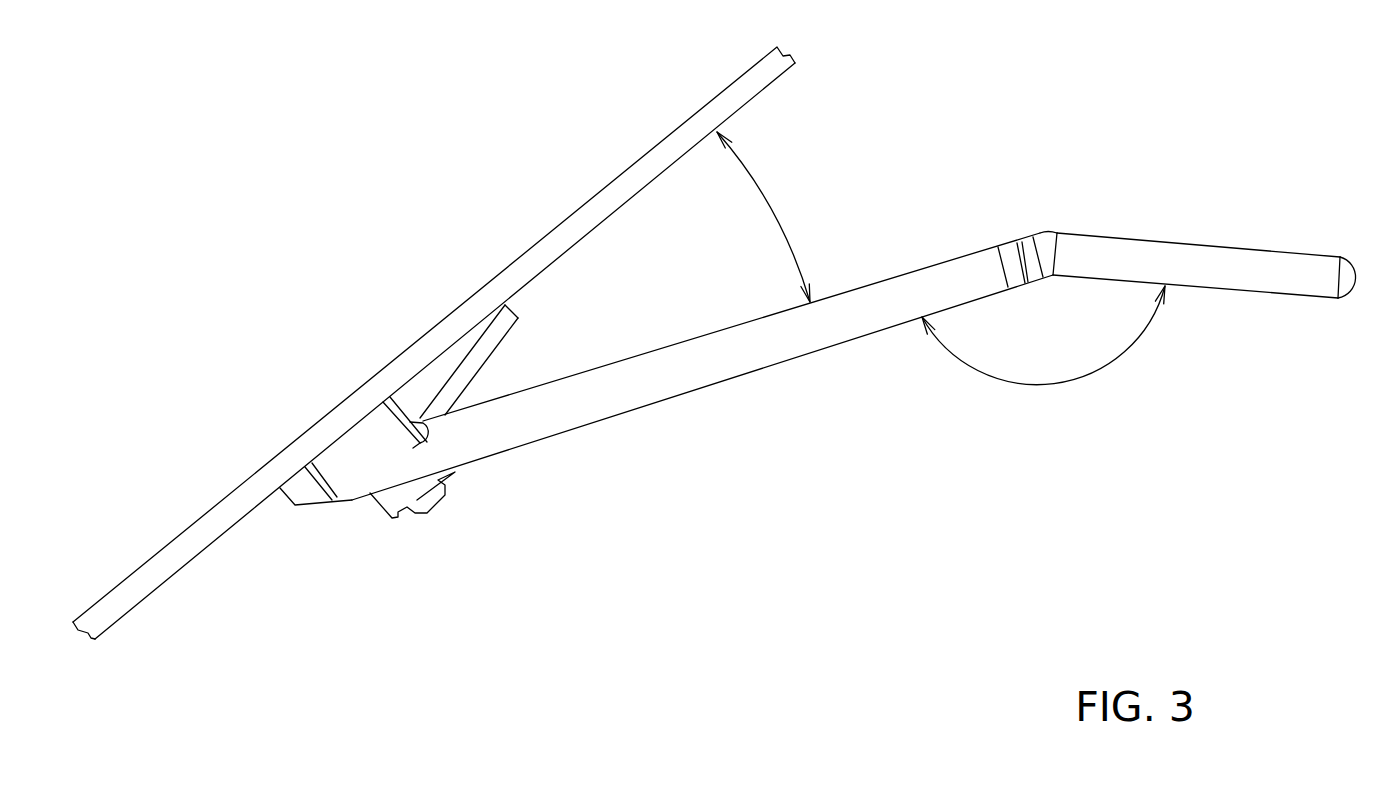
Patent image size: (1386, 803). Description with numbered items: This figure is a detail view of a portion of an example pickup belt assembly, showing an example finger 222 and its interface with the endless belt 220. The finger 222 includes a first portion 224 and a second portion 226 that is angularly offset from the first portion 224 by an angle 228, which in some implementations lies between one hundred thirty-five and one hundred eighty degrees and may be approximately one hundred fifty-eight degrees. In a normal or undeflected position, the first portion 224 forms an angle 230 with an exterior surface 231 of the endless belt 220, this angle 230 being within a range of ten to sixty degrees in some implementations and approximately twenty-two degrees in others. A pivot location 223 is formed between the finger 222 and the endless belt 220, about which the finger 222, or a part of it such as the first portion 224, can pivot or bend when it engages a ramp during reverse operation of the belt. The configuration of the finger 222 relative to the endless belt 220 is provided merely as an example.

The endless belt 220 is at (408, 349).
The finger 222 is at (960, 256).
The pivot location 223 is at (315, 506).
The first portion 224 is at (617, 415).
The second portion 226 is at (1303, 300).
The angle 228 is at (1028, 376).
The angle 230 is at (768, 207).
The exterior surface 231 is at (240, 521).